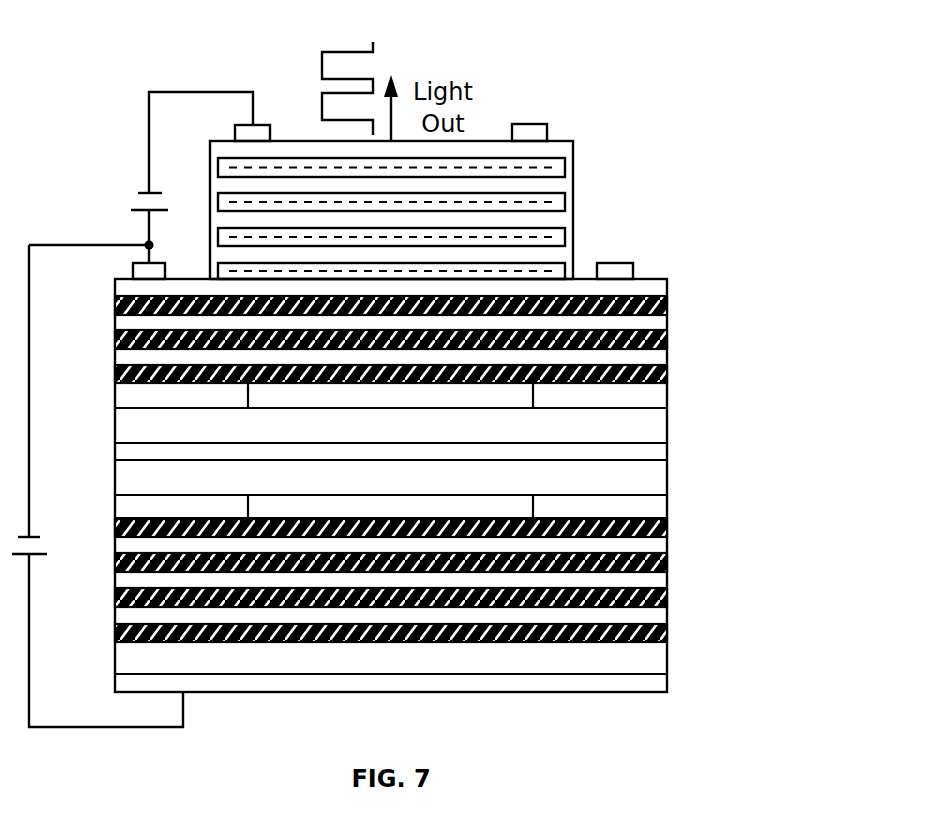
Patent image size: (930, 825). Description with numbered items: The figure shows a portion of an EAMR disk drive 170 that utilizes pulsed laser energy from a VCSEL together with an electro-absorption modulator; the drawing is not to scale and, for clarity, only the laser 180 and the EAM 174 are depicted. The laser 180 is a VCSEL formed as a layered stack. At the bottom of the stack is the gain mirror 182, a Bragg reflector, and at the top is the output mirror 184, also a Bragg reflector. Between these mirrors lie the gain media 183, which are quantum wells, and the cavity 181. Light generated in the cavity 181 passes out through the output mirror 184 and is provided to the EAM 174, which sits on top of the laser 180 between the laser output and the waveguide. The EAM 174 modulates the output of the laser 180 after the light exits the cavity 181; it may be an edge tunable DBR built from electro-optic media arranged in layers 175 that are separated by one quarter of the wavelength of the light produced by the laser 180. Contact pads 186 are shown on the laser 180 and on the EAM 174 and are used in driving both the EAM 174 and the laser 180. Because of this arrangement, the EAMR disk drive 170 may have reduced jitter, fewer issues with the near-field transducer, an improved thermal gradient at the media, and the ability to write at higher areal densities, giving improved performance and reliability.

The EAMR disk drive 170 is at (371, 32).
The EAM 174 is at (210, 210).
The layers 175 is at (566, 262).
The contact pads 186 is at (270, 125).
The laser 180 is at (776, 399).
The output mirror 184 is at (681, 337).
The gain media 183 is at (105, 455).
The cavity 181 is at (420, 503).
The gain mirror 182 is at (681, 580).